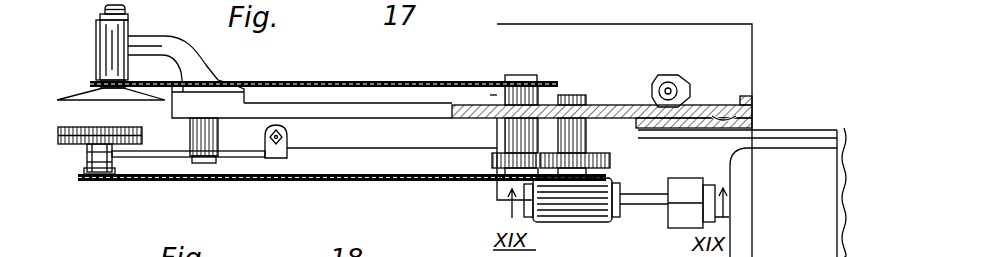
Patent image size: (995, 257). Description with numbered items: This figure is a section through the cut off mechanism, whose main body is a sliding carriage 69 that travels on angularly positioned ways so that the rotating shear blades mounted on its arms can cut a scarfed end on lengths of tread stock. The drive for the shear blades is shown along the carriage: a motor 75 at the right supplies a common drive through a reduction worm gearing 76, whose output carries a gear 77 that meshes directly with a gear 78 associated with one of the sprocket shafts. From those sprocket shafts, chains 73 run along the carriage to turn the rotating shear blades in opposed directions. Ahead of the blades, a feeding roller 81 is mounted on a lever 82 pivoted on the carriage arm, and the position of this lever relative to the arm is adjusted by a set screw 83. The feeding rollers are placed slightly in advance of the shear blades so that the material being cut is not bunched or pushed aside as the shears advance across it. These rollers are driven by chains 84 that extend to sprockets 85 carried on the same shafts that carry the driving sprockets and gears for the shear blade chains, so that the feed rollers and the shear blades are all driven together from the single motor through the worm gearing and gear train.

The sliding carriage 69 is at (733, 119).
The chains 73 is at (411, 78).
The motor 75 is at (742, 192).
The reduction worm gearing 76 is at (619, 217).
The gear 77 is at (612, 160).
The gear 78 is at (492, 158).
The feeding rollers 81 is at (151, 128).
The levers 82 is at (150, 156).
The set screws 83 is at (286, 134).
The chains 84 is at (157, 182).
The sprockets 85 is at (490, 173).